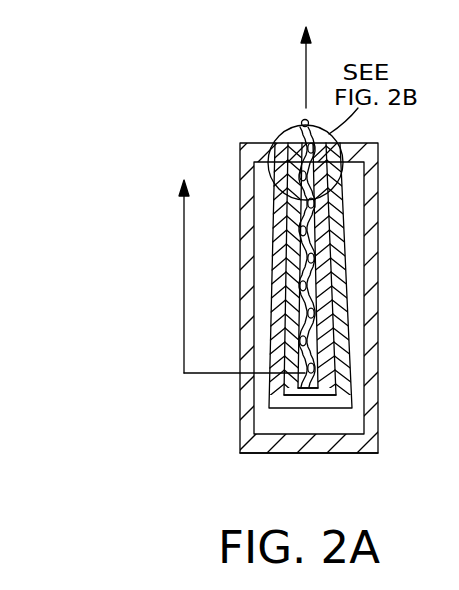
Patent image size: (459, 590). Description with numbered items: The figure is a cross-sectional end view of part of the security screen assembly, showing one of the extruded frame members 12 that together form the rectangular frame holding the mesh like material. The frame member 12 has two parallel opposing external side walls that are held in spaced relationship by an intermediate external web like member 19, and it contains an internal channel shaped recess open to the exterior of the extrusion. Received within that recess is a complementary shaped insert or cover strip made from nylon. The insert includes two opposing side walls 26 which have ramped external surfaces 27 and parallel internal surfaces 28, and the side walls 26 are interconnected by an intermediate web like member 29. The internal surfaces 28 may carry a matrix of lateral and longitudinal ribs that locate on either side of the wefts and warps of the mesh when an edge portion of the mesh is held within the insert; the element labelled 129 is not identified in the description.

The frame member 12 is at (378, 426).
The intermediate external web like member 19 is at (371, 456).
The side wall 26 is at (292, 274).
The ramped external surface 27 is at (337, 336).
The parallel internal surface 28 is at (313, 353).
The intermediate web like member 29 is at (309, 395).
The inner layer bottom 129 is at (307, 393).